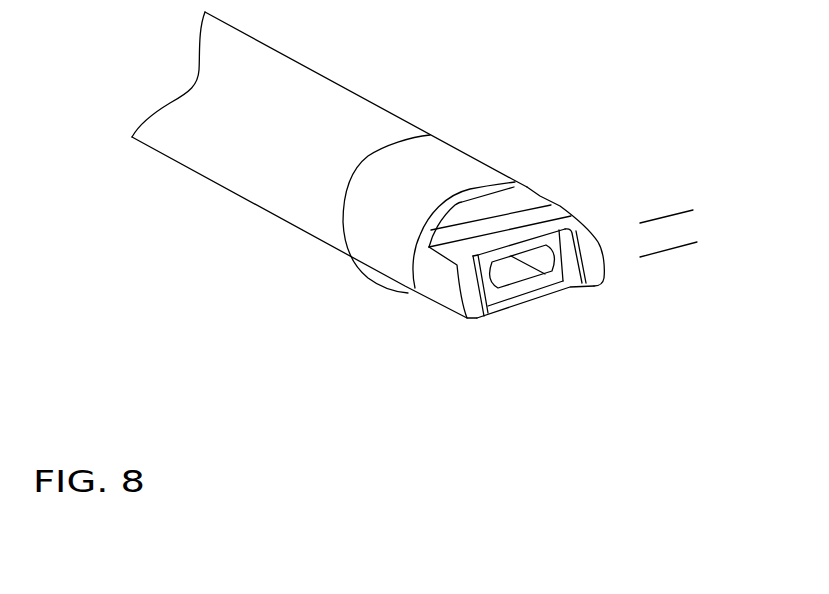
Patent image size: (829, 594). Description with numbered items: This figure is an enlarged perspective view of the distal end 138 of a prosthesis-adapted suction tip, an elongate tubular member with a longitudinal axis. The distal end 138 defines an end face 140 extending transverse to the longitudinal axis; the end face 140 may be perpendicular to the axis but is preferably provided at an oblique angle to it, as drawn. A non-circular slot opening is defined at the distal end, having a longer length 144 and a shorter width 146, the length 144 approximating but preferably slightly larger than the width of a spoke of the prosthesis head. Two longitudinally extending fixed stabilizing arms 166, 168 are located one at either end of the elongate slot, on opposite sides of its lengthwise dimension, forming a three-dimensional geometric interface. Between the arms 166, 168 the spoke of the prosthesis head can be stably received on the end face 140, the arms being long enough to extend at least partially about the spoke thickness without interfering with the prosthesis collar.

The distal end 138 is at (373, 238).
The end face 140 is at (530, 238).
The length 144 is at (583, 335).
The width 146 is at (673, 183).
The stabilizing arm 166 is at (467, 292).
The stabilizing arm 168 is at (588, 243).